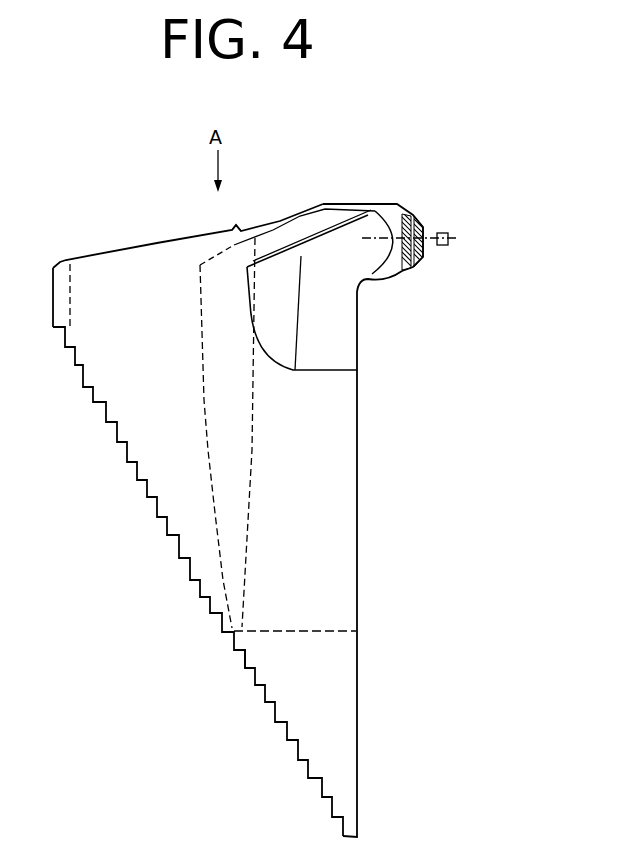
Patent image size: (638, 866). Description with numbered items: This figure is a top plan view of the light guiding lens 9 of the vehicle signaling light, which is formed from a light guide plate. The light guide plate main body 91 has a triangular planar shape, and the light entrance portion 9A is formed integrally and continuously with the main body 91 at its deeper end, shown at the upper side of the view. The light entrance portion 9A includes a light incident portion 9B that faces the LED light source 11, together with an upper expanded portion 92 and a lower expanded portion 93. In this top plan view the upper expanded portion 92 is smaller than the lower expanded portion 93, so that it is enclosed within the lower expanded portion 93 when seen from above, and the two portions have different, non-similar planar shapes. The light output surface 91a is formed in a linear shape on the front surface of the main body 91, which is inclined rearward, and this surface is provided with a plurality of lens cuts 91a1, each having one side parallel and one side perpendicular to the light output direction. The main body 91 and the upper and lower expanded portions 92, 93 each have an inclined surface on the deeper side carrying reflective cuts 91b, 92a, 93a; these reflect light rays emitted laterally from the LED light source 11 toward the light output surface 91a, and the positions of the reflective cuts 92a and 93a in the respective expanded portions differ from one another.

The light guiding lens 9 is at (346, 520).
The light entrance portion 9A is at (338, 346).
The light incident portion 9B is at (417, 225).
The LED light source 11 is at (457, 216).
The light guide plate main body 91 is at (192, 516).
The light output surface 91a is at (198, 581).
The lens cuts 91a1 is at (205, 672).
The reflective cuts 91b is at (188, 232).
The upper expanded portion 92 is at (306, 403).
The reflective cuts 92a is at (309, 223).
The lower expanded portion 93 is at (242, 414).
The reflective cuts 93a is at (226, 231).